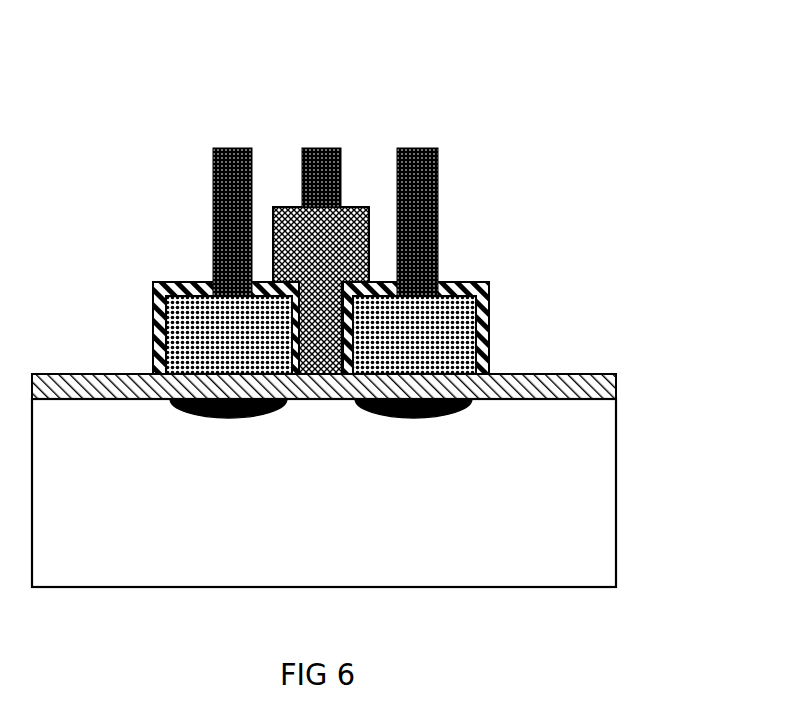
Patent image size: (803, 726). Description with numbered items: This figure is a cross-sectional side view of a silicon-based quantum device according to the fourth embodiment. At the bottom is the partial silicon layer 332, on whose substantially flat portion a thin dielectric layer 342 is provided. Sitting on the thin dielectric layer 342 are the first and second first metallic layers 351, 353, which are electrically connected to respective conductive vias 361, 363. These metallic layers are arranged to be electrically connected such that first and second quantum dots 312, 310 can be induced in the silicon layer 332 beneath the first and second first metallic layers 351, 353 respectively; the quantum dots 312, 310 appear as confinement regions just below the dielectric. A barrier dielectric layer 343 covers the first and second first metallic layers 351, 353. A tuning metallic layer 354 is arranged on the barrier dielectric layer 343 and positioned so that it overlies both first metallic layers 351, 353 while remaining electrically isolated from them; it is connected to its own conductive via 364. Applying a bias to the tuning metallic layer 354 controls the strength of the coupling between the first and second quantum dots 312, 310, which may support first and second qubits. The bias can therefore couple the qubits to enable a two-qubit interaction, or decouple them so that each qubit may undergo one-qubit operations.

The silicon layer 332 is at (572, 428).
The thin dielectric layer 342 is at (516, 386).
The first quantum dot 312 is at (229, 421).
The second quantum dot 310 is at (411, 418).
The tuning metallic layer 354 is at (295, 257).
The barrier dielectric layer 343 is at (159, 331).
The first first metallic layer 351 is at (192, 319).
The second first metallic layer 353 is at (448, 322).
The conductive via 361 is at (233, 196).
The conductive via 364 is at (340, 160).
The conductive via 363 is at (435, 208).